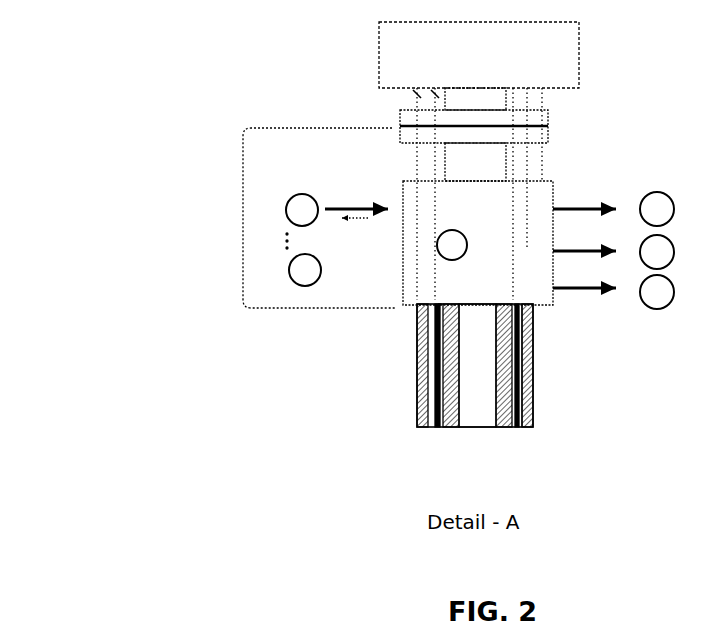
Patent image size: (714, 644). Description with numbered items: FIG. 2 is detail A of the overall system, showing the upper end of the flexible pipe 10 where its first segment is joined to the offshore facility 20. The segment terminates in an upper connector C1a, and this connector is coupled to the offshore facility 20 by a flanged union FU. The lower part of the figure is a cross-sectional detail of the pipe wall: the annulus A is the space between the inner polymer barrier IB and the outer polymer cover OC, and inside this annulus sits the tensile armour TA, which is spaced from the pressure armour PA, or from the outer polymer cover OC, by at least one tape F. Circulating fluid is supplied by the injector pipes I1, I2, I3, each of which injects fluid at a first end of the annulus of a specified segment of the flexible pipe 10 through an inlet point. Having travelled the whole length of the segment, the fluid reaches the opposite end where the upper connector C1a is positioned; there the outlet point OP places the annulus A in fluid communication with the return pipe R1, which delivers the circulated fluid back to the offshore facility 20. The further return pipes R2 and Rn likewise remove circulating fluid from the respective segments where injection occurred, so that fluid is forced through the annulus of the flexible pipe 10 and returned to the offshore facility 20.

The offshore facility 20 is at (479, 55).
The flanged union FU is at (551, 132).
The upper connector C1a is at (243, 228).
The return pipe R2 is at (337, 210).
The return pipe Rn is at (305, 270).
The return pipe R1 is at (452, 245).
The outlet point OP is at (441, 301).
The injector pipe I3 is at (613, 209).
The injector pipe I2 is at (613, 252).
The injector pipe I1 is at (613, 292).
The flexible pipe 10 is at (452, 411).
The outer polymer cover OC is at (416, 357).
The tensile armour TA is at (434, 394).
The tape F is at (437, 405).
The inner polymer barrier IB is at (500, 429).
The pressure armour PA is at (516, 365).
The annulus A is at (526, 397).